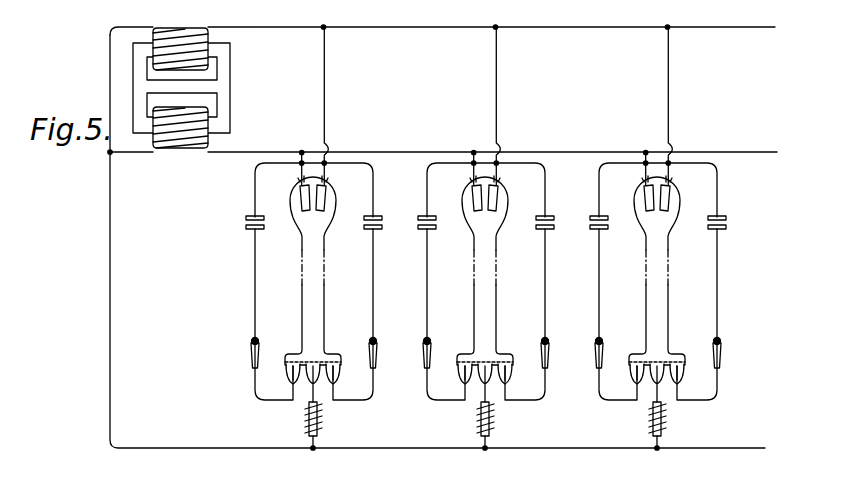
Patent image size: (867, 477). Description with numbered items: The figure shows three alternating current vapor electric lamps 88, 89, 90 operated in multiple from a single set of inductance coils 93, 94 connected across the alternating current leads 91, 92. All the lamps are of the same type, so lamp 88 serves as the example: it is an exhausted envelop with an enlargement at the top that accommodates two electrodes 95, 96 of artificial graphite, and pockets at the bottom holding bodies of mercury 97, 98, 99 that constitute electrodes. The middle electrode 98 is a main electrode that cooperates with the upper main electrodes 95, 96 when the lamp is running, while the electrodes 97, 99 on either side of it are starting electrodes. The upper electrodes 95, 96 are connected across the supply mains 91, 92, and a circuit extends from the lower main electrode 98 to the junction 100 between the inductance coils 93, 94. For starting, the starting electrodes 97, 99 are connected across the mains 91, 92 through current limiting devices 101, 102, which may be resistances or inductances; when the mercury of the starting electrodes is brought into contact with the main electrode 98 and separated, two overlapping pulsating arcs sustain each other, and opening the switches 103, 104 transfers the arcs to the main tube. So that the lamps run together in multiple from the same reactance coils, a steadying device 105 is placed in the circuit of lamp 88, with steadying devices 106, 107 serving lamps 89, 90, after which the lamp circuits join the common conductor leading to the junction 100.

The alternating current lamp 88 is at (312, 294).
The alternating current lamp 89 is at (480, 297).
The alternating current lamp 90 is at (653, 299).
The alternating current lead 91 is at (754, 27).
The alternating current lead 92 is at (760, 152).
The inductance coil 93 is at (186, 24).
The inductance coil 94 is at (197, 131).
The upper main electrode 95 is at (301, 199).
The upper main electrode 96 is at (325, 200).
The starting electrode 97 is at (291, 369).
The lower main electrode 98 is at (310, 384).
The starting electrode 99 is at (336, 372).
The junction 100 is at (105, 153).
The current limiting device 101 is at (252, 221).
The current limiting device 102 is at (372, 221).
The switch 103 is at (252, 342).
The switch 104 is at (376, 355).
The steadying device 105 is at (320, 425).
The steadying device 106 is at (491, 418).
The steadying device 107 is at (664, 418).